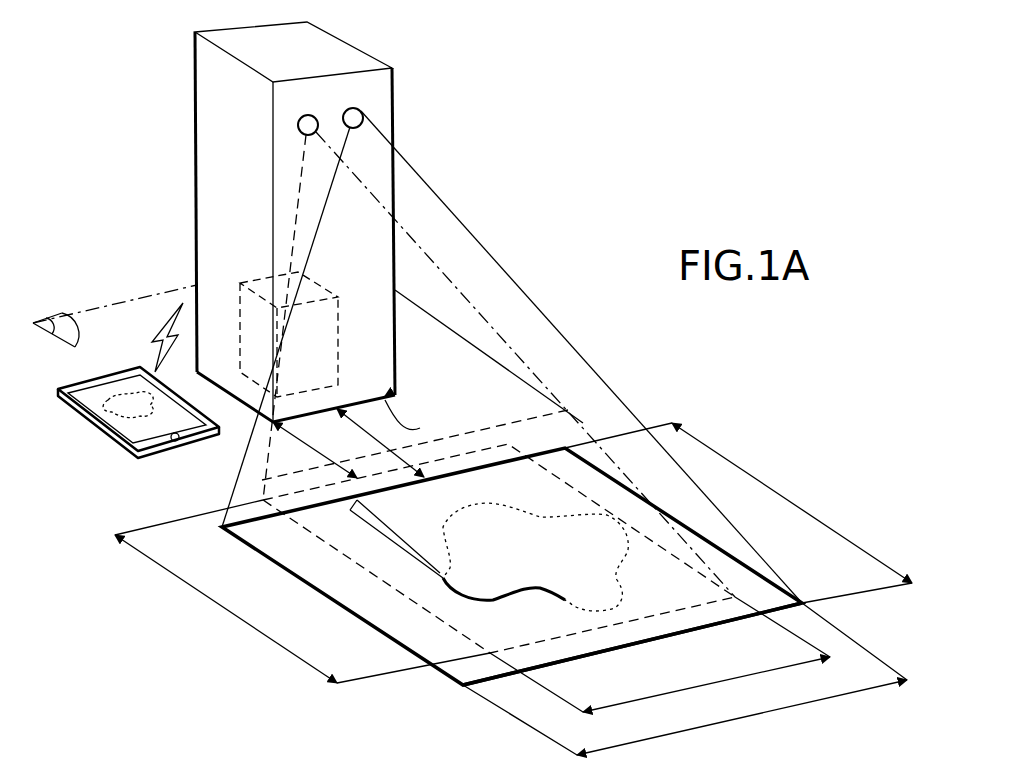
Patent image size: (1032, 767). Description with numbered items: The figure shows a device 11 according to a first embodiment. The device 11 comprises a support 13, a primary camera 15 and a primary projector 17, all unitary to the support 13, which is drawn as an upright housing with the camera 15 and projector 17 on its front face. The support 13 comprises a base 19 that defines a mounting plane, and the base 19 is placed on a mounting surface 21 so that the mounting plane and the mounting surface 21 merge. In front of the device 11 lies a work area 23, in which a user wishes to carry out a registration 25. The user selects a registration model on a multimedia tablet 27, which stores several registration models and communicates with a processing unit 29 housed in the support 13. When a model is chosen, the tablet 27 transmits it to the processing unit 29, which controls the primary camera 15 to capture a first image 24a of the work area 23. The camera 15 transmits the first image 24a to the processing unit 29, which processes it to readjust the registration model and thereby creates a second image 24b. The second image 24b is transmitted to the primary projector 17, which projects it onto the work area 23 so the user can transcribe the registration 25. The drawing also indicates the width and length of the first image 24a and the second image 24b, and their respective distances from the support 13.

The device 11 is at (152, 94).
The support 13 is at (205, 193).
The primary camera 15 is at (364, 114).
The primary projector 17 is at (298, 124).
The base 19 is at (380, 370).
The mounting surface 21 is at (58, 321).
The work area 23 is at (337, 590).
The first image 24a is at (630, 656).
The second image 24b is at (660, 614).
The registration 25 is at (516, 590).
The multimedia tablet 27 is at (97, 428).
The processing unit 29 is at (335, 337).